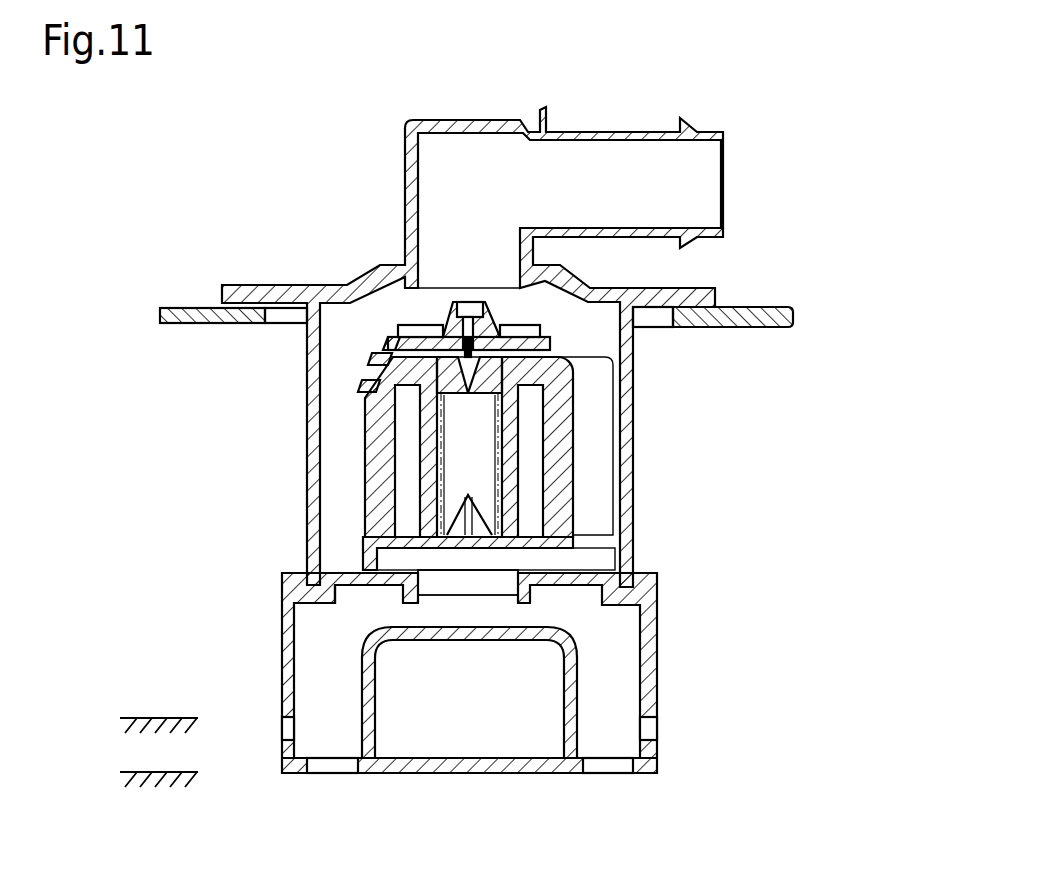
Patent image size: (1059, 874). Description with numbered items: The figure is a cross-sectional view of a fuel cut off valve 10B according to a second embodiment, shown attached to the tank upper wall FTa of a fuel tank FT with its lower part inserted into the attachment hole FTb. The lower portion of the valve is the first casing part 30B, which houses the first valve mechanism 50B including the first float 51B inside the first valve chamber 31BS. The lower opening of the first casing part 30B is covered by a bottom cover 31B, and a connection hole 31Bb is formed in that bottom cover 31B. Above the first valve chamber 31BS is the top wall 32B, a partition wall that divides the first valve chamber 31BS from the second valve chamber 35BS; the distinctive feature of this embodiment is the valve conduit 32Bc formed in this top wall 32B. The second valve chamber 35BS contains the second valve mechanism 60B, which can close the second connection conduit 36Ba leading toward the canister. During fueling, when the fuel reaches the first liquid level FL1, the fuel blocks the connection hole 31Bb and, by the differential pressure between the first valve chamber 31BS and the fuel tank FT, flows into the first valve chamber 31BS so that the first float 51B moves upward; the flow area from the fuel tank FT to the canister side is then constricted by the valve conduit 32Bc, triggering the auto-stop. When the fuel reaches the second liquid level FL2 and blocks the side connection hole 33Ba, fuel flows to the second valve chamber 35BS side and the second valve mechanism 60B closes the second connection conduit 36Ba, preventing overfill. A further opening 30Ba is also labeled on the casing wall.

The fuel cut off valve 10B is at (308, 285).
The second connection conduit 36Ba is at (465, 275).
The tank upper wall FTa is at (760, 307).
The fuel tank FT is at (536, 293).
The attachment hole FTb is at (663, 320).
The second valve chamber 35BS is at (335, 393).
The second valve mechanism 60B is at (365, 497).
The valve conduit 32Bc is at (578, 575).
The top wall 32B is at (618, 570).
The first valve chamber 31BS is at (340, 625).
The first float 51B is at (360, 660).
The first valve mechanism 50B is at (351, 684).
The first casing part 30B is at (658, 632).
The second liquid level FL2 is at (157, 718).
The first liquid level FL1 is at (155, 772).
The side connection hole 33Ba is at (288, 728).
The bottom cover 31B is at (475, 772).
The connection hole 31Bb is at (615, 762).
The side wall opening 30Ba is at (617, 747).